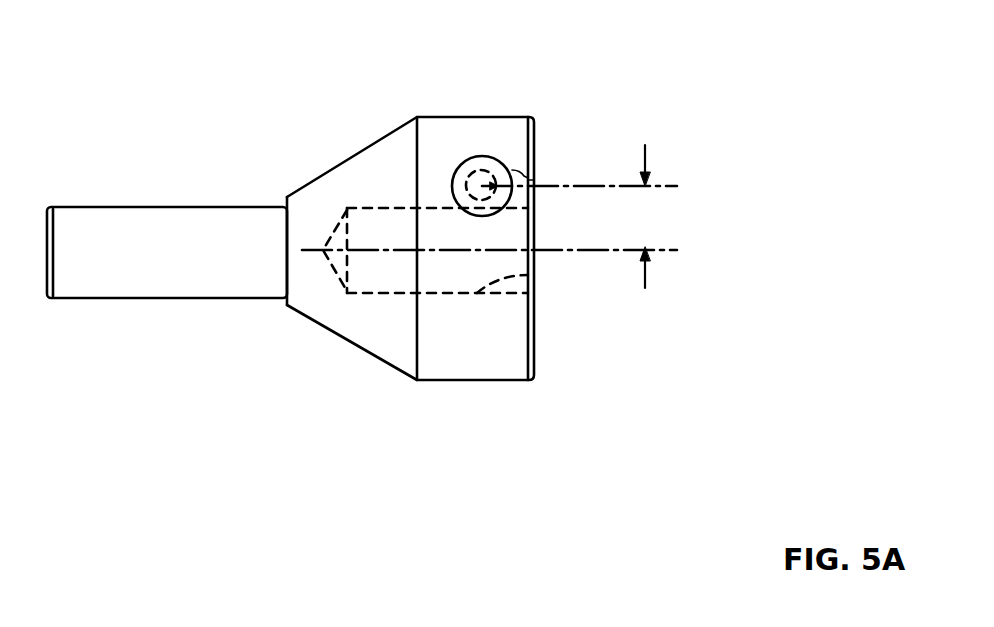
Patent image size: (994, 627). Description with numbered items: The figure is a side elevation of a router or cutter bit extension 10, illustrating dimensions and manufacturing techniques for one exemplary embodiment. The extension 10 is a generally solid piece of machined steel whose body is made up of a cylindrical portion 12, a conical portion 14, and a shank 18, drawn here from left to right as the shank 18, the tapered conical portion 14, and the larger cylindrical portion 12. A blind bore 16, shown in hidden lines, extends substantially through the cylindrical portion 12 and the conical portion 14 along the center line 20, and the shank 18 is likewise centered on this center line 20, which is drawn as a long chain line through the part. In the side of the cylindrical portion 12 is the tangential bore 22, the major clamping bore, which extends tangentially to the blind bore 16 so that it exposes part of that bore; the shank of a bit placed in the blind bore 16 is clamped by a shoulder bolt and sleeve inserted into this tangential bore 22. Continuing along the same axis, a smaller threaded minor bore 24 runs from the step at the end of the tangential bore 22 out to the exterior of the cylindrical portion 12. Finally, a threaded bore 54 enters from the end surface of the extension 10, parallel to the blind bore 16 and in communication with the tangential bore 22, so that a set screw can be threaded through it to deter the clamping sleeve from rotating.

The router or cutter bit extension 10 is at (388, 262).
The cylindrical portion 12 is at (487, 380).
The conical portion 14 is at (343, 342).
The blind bore 16 is at (535, 287).
The shank 18 is at (170, 283).
The center line 20 is at (553, 248).
The tangential bore 22 is at (462, 158).
The minor bore 24 is at (483, 173).
The threaded bore 54 is at (540, 177).